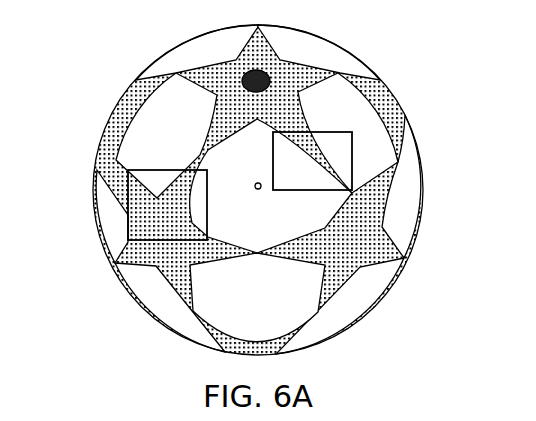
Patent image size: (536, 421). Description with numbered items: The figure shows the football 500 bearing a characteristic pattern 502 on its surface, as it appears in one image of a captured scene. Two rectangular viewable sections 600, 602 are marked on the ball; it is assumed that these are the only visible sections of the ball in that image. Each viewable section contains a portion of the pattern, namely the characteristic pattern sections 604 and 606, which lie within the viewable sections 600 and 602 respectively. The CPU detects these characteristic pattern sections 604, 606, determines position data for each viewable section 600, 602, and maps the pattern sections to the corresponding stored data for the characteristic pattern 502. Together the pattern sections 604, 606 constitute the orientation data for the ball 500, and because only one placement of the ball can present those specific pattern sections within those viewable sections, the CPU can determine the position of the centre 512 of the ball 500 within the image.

The football 500 is at (422, 182).
The characteristic pattern 502 is at (350, 266).
The centre of the ball 512 is at (255, 188).
The viewable section 600 is at (128, 226).
The viewable section 602 is at (353, 178).
The characteristic pattern section 604 is at (164, 179).
The characteristic pattern section 606 is at (332, 157).